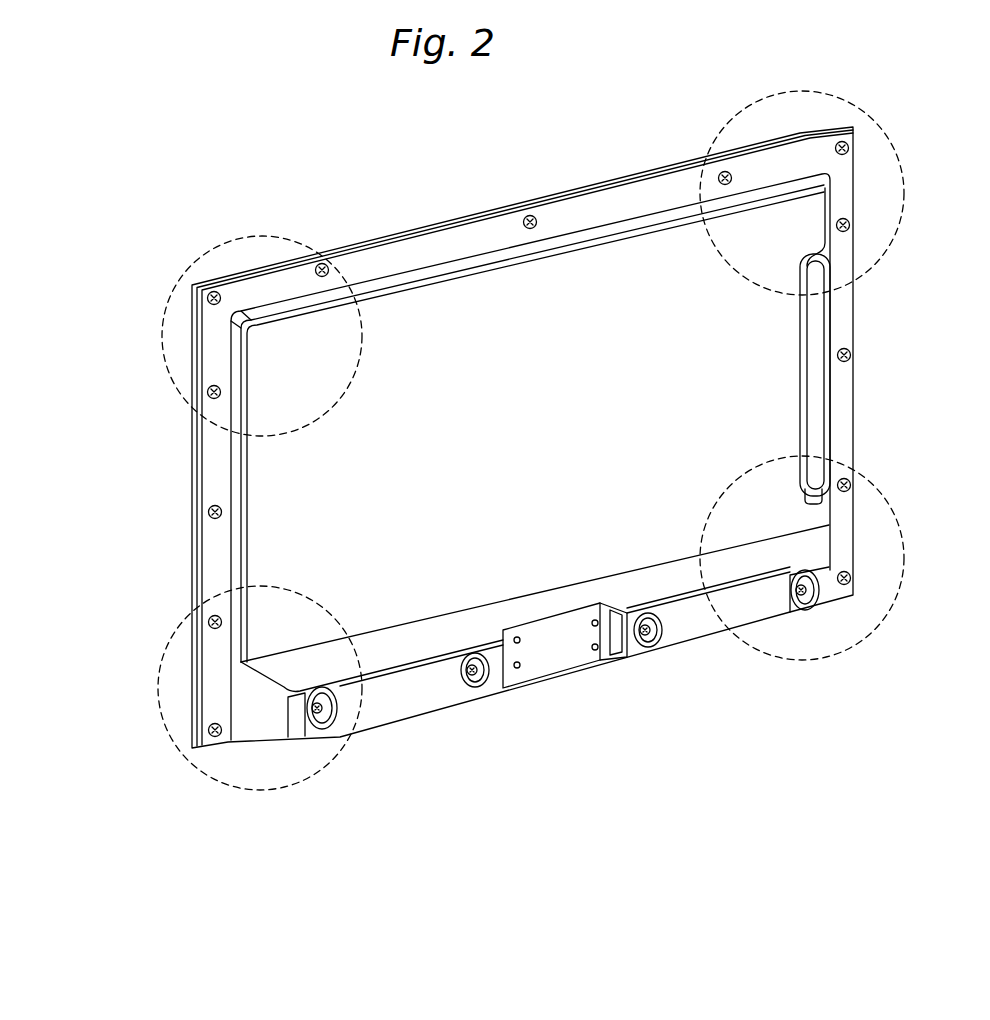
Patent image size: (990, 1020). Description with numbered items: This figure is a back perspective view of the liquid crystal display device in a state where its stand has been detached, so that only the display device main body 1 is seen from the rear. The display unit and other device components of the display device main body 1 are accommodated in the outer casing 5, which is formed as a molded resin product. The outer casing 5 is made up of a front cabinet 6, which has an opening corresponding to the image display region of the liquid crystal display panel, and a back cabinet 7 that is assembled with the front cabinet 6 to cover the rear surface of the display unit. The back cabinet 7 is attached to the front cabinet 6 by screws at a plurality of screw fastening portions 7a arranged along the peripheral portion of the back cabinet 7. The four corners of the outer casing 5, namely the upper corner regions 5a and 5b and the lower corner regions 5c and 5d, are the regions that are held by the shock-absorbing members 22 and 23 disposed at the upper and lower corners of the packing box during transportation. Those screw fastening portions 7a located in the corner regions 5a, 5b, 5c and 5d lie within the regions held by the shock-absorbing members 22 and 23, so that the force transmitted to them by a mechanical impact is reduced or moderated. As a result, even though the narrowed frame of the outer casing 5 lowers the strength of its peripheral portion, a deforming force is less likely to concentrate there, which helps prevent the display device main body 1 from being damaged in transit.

The display device main body 1 is at (504, 201).
The outer casing 5 is at (870, 326).
The upper corner region 5a is at (200, 246).
The upper corner region 5b is at (826, 94).
The lower corner region 5c is at (211, 787).
The lower corner region 5d is at (849, 653).
The front cabinet 6 is at (194, 470).
The back cabinet 7 is at (487, 300).
The screw fastening portions 7a is at (720, 176).
The shock-absorbing member 22 is at (511, 248).
The shock-absorbing member 23 is at (531, 635).